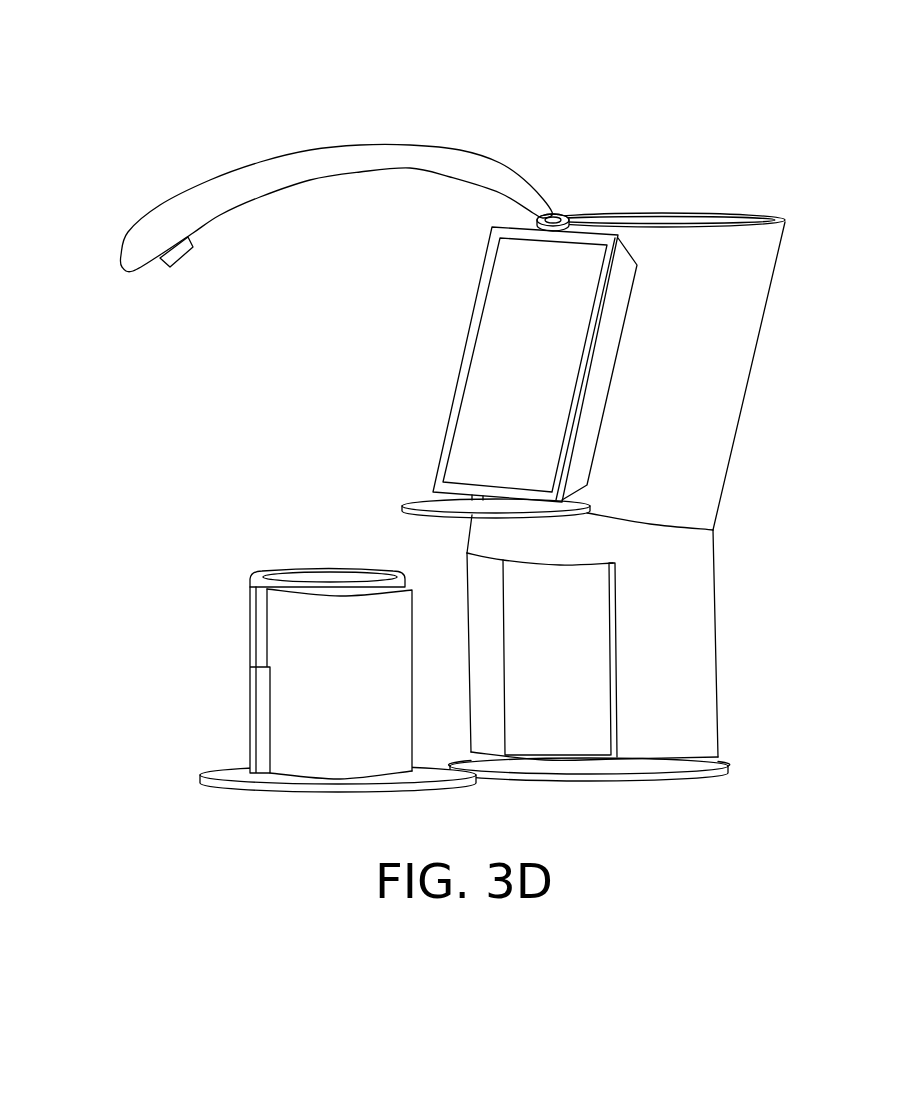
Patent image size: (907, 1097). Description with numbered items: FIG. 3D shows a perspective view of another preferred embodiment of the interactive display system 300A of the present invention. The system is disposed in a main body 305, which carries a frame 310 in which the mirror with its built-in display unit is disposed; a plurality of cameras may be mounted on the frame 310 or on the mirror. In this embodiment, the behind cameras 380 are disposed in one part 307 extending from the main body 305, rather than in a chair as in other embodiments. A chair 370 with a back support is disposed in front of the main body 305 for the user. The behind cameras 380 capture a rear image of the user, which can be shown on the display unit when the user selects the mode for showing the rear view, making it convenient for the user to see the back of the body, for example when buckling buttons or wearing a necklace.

The interactive display system 300A is at (513, 418).
The main body 305 is at (743, 297).
The part extending from the main body 307 is at (341, 144).
The frame 310 is at (598, 382).
The chair 370 is at (273, 645).
The behind cameras 380 is at (174, 255).